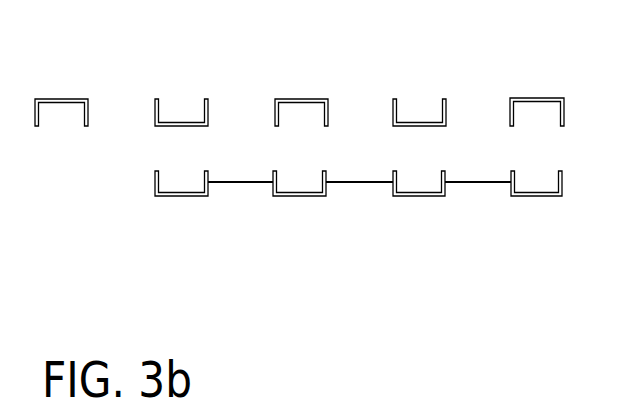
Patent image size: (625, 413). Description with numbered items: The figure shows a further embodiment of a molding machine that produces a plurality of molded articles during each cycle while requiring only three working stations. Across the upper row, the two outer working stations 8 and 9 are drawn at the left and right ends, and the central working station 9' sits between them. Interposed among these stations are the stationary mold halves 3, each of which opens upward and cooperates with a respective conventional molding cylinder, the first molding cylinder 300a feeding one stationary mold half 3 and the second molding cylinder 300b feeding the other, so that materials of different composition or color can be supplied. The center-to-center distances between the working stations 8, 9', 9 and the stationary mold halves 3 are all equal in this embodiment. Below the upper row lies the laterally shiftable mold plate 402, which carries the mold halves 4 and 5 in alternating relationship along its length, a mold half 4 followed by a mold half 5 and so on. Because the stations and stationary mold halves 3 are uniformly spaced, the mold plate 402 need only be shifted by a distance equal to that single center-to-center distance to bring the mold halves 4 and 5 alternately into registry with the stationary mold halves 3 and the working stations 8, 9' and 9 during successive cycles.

The outer working station 8 is at (61, 99).
The molding cylinder 300a is at (181, 107).
The central working station 9' is at (301, 77).
The stationary mold half 3 is at (430, 100).
The molding cylinder 300b is at (419, 107).
The outer working station 9 is at (537, 85).
The mold half 4 is at (180, 197).
The mold half 5 is at (305, 197).
The laterally shiftable mold plate 402 is at (375, 180).